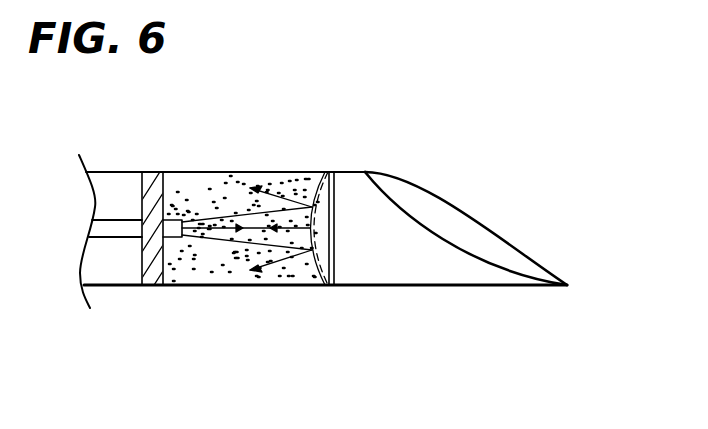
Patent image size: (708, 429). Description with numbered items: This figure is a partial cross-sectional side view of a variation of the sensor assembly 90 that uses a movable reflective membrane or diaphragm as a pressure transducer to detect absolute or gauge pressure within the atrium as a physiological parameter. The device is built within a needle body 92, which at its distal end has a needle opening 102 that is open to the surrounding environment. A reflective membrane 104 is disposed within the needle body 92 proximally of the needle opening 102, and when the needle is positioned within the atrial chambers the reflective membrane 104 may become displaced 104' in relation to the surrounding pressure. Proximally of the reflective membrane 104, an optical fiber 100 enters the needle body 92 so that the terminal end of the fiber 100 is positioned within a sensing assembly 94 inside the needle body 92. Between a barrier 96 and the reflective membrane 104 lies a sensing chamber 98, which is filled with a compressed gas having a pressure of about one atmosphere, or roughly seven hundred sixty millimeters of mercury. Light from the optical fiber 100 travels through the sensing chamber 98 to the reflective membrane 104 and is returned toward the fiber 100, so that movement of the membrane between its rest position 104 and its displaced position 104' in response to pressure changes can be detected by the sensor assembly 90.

The sensor assembly 90 is at (317, 150).
The needle body 92 is at (448, 286).
The sensing assembly 94 is at (173, 172).
The barrier 96 is at (158, 287).
The sensing chamber 98 is at (243, 183).
The optical fiber 100 is at (110, 238).
The needle opening 102 is at (522, 242).
The reflective membrane 104 is at (379, 261).
The displaced reflective membrane 104' is at (301, 261).